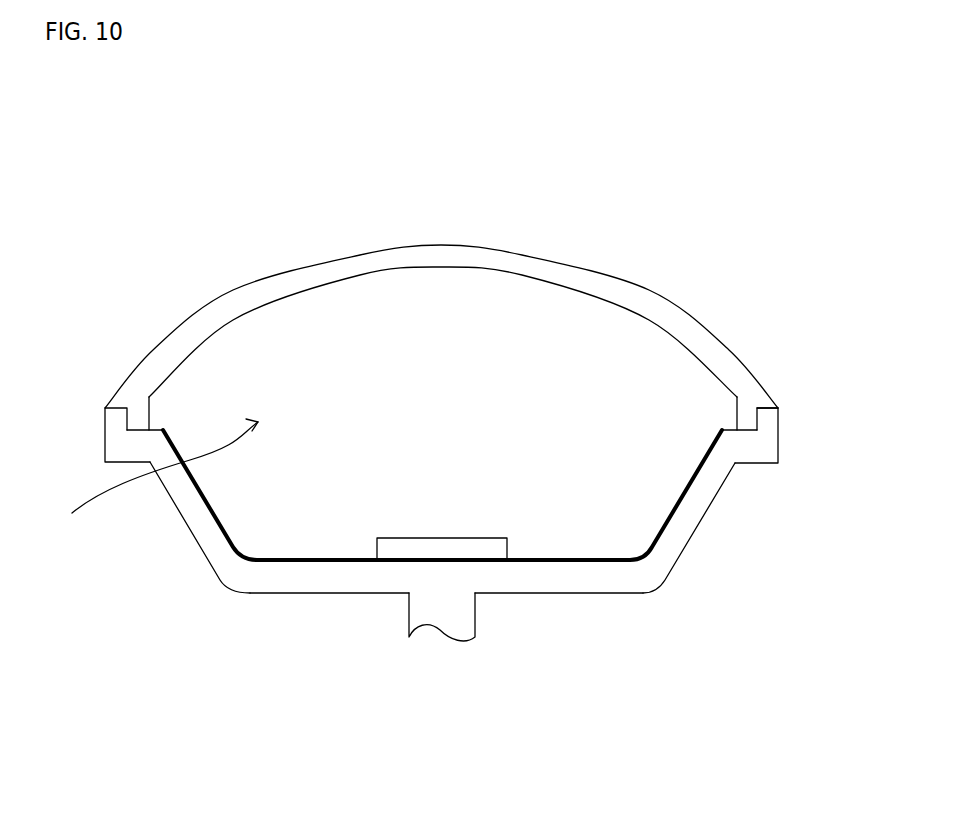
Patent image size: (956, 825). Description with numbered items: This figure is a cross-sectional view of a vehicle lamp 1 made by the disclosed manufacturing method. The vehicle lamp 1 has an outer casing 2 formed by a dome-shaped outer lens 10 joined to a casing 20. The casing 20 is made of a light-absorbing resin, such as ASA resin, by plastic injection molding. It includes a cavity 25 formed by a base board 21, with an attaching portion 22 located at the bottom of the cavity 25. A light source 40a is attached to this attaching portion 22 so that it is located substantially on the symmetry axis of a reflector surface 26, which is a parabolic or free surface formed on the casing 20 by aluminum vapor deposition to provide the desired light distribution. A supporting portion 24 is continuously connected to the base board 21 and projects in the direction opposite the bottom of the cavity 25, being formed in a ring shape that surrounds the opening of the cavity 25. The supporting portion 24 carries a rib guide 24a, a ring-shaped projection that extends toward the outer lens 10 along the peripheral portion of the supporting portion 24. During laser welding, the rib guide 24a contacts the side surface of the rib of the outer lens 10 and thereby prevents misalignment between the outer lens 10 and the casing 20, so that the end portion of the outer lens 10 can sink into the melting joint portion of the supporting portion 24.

The vehicle lamp 1 is at (483, 212).
The outer lens 10 is at (622, 300).
The outer casing 2 is at (740, 420).
The casing 20 is at (198, 523).
The base board 21 is at (285, 578).
The attaching portion 22 is at (408, 597).
The supporting portion 24 is at (753, 463).
The rib guide 24a is at (760, 407).
The cavity 25 is at (155, 476).
The reflector surface 26 is at (638, 558).
The light source 40a is at (485, 553).